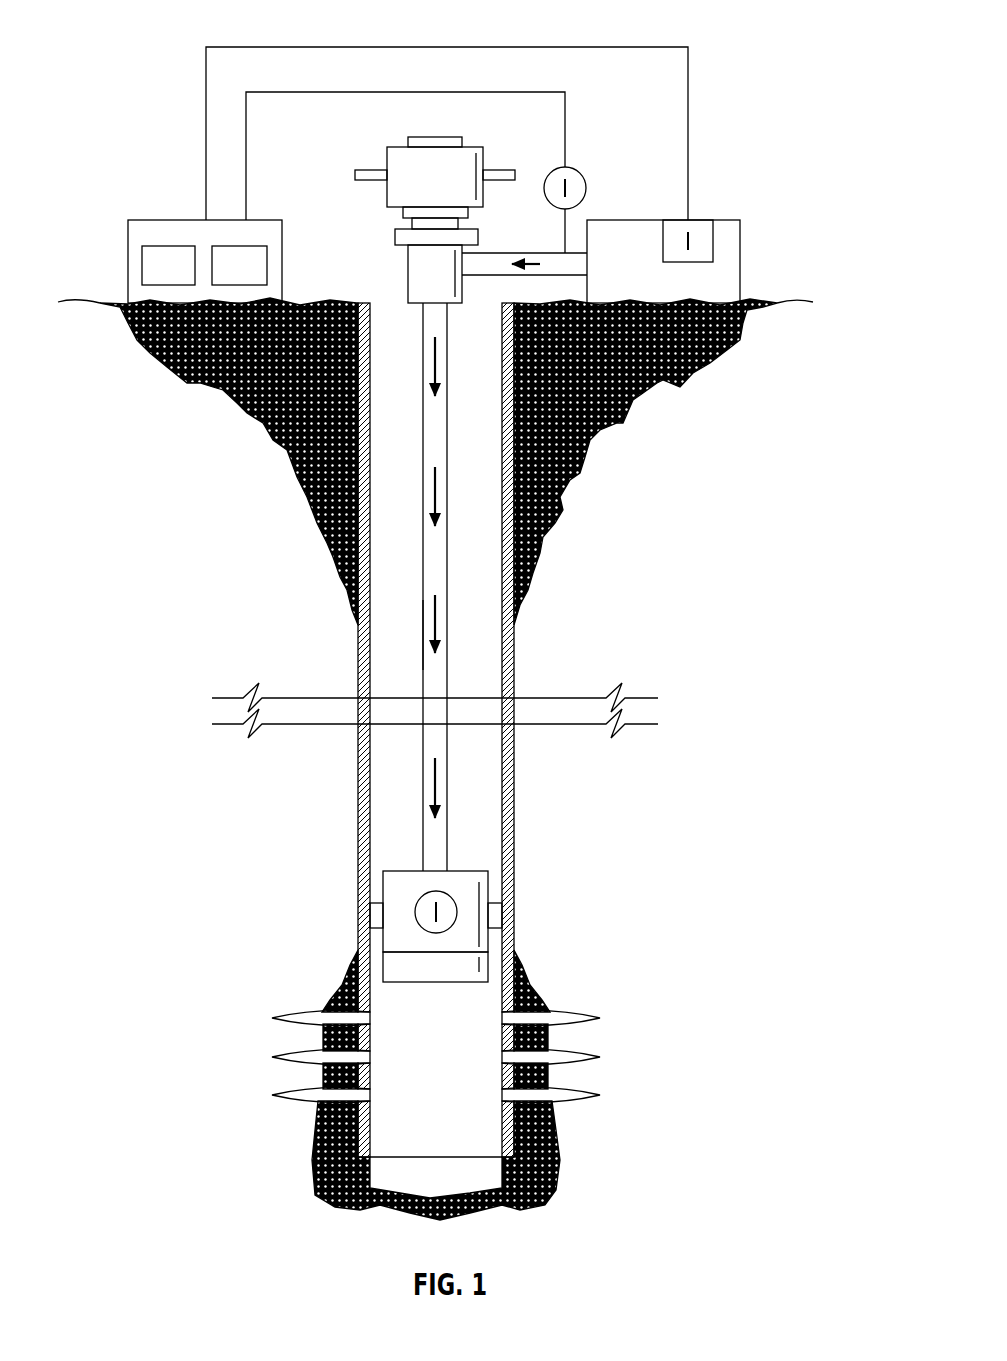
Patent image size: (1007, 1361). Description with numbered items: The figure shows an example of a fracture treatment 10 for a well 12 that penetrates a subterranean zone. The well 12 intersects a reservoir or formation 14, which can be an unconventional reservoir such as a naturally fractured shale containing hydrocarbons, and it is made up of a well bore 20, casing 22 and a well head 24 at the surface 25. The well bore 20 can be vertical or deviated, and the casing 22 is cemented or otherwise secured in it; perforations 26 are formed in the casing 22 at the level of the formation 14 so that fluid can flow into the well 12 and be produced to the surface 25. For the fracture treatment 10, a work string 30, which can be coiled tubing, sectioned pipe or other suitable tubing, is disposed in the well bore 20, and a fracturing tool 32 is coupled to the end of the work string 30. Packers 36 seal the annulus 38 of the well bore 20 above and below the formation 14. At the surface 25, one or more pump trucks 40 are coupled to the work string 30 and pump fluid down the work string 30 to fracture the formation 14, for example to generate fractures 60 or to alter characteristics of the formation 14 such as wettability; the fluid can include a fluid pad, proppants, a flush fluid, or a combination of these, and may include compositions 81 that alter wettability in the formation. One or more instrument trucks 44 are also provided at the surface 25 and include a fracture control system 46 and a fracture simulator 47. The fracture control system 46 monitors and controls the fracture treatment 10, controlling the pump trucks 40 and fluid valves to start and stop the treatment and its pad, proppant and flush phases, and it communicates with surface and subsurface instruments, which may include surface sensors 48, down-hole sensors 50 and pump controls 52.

The fracture treatment 10 is at (744, 88).
The well 12 is at (366, 150).
The formation 14 is at (677, 901).
The well bore 20 is at (515, 652).
The casing 22 is at (371, 434).
The well head 24 is at (396, 237).
The surface 25 is at (72, 300).
The perforations 26 is at (500, 1018).
The work string 30 is at (422, 667).
The fracturing tool 32 is at (447, 983).
The packers 36 is at (503, 917).
The annulus 38 is at (489, 636).
The pump trucks 40 is at (675, 233).
The instrument truck 44 is at (195, 233).
The fracture control system 46 is at (182, 278).
The fracture simulator 47 is at (254, 278).
The surface sensors 48 is at (586, 190).
The down-hole sensors 50 is at (481, 905).
The pump controls 52 is at (663, 260).
The fractures 60 is at (467, 1028).
The compositions 81 is at (519, 263).